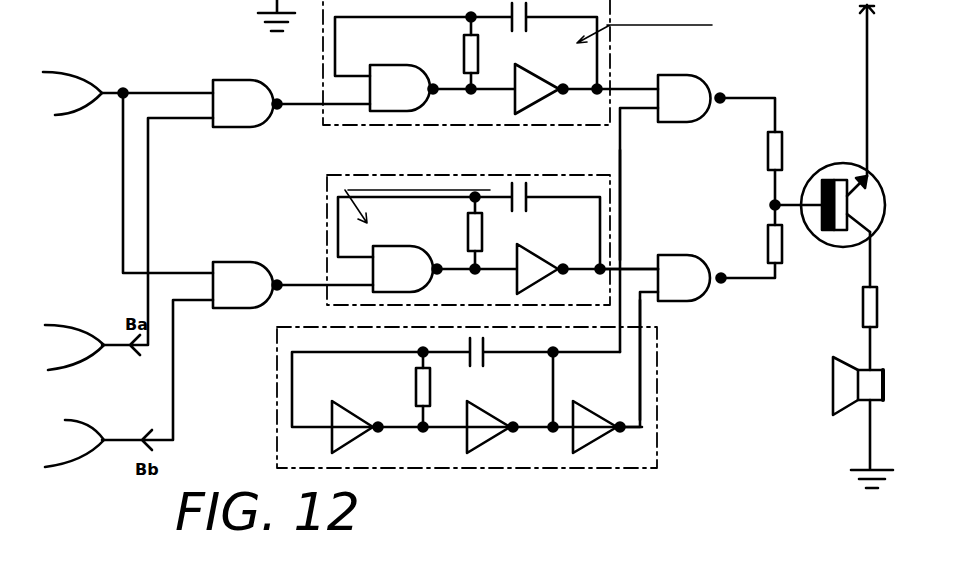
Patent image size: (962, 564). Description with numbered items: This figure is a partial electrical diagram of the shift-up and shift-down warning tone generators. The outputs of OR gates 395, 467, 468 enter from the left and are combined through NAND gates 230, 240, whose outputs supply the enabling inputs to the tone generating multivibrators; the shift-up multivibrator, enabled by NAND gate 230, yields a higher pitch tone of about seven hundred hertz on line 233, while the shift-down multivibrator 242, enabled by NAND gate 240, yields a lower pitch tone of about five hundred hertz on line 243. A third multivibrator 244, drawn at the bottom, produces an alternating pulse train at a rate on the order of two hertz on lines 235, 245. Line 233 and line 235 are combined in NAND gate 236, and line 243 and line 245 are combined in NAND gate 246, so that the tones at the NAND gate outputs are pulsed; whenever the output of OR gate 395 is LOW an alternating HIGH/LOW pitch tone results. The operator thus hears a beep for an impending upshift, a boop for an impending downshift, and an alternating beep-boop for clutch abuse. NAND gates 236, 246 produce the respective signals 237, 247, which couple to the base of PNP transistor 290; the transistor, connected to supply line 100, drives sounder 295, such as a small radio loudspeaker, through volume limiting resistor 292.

The supply line 100 is at (866, 88).
The NAND gate 230 is at (260, 96).
The line 233 is at (626, 82).
The line 235 is at (622, 212).
The NAND gate 236 is at (706, 88).
The signal 237 is at (773, 102).
The NAND gate 240 is at (250, 275).
The tone generating multivibrator 242 is at (321, 198).
The line 243 is at (637, 262).
The multivibrator 244 is at (277, 373).
The line 245 is at (640, 304).
The NAND gate 246 is at (709, 270).
The signal 247 is at (755, 280).
The PNP transistor 290 is at (843, 163).
The volume limiting resistor 292 is at (878, 305).
The sounder 295 is at (887, 386).
The OR gate 395 is at (84, 82).
The OR gate 467 is at (86, 341).
The OR gate 468 is at (94, 443).